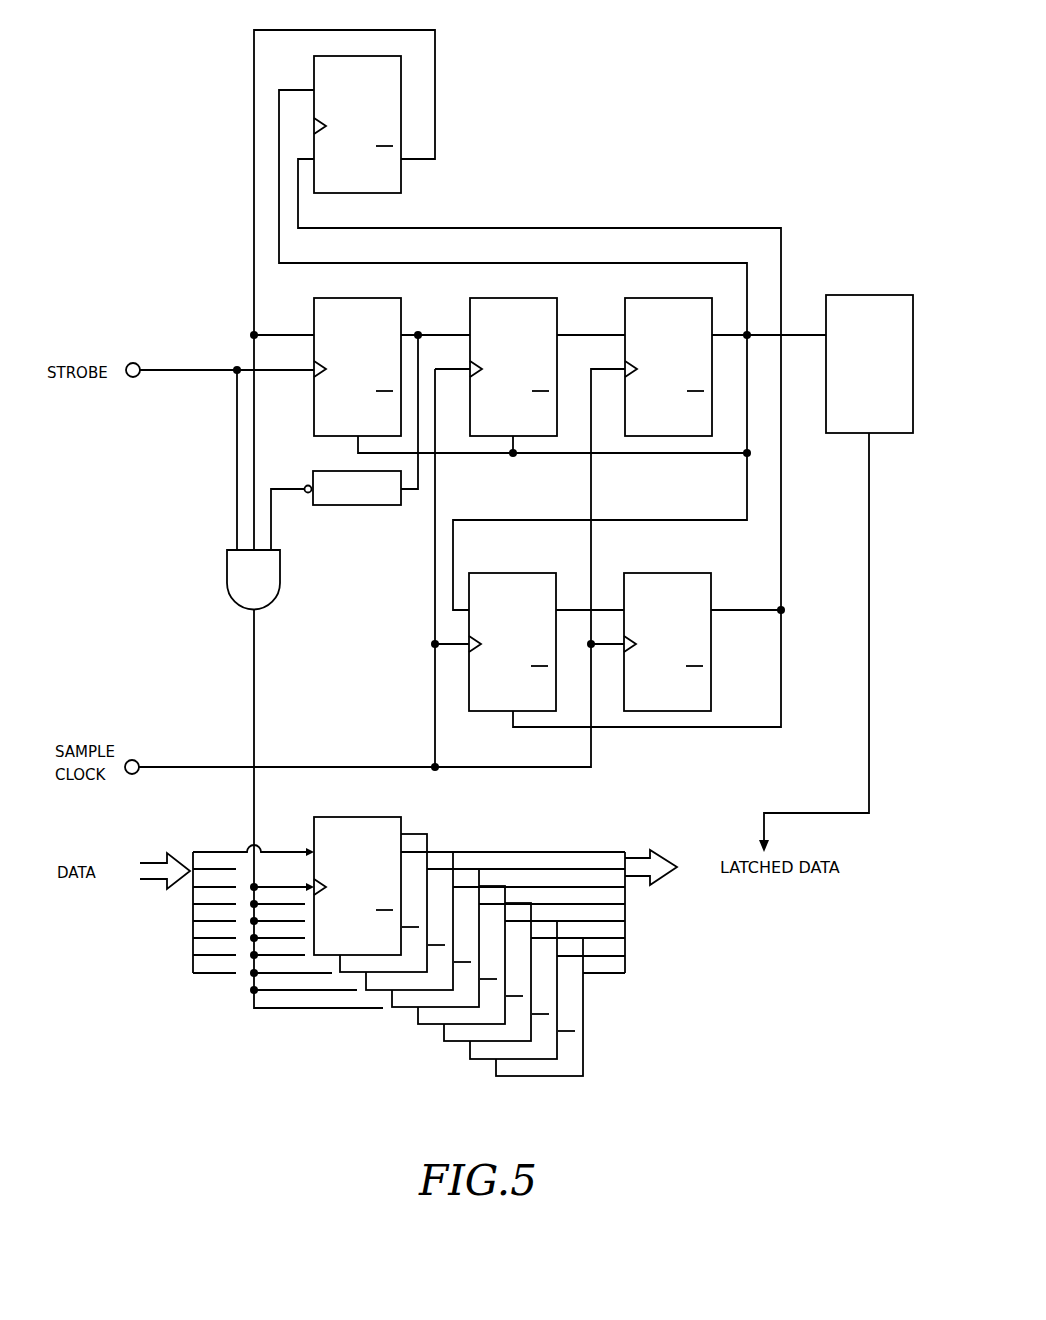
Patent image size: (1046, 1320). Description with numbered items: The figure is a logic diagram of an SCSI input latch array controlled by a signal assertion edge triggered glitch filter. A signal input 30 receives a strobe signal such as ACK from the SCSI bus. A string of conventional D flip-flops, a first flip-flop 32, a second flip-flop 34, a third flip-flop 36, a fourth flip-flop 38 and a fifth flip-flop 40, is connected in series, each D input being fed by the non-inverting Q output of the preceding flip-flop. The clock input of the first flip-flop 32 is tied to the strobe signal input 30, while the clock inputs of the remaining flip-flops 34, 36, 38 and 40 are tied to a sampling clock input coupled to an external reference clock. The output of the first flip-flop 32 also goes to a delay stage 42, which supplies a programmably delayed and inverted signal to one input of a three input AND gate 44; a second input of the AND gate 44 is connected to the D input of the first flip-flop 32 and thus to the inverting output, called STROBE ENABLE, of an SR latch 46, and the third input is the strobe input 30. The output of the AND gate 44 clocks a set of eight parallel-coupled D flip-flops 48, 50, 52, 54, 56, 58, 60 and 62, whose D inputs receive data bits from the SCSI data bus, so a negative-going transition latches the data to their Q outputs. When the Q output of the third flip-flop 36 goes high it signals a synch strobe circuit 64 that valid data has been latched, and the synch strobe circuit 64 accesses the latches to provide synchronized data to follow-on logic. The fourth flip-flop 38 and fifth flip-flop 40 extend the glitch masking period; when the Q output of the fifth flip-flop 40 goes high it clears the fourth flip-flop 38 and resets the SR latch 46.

The signal input 30 is at (135, 362).
The first flip-flop FF1 32 is at (327, 303).
The second flip-flop FF2 34 is at (490, 303).
The third flip-flop FF3 36 is at (643, 303).
The fourth flip-flop FF4 38 is at (545, 580).
The fifth flip-flop FF5 40 is at (711, 580).
The delay stage 42 is at (367, 503).
The three input AND gate 44 is at (237, 577).
The SR latch 46 is at (398, 174).
The D flip-flop 48 is at (335, 822).
The D flip-flop 50 is at (414, 837).
The D flip-flop 52 is at (443, 855).
The D flip-flop 54 is at (405, 1000).
The D flip-flop 56 is at (430, 1017).
The D flip-flop 58 is at (460, 1035).
The D flip-flop 60 is at (487, 1052).
The D flip-flop 62 is at (525, 1078).
The synch strobe circuit 64 is at (848, 310).